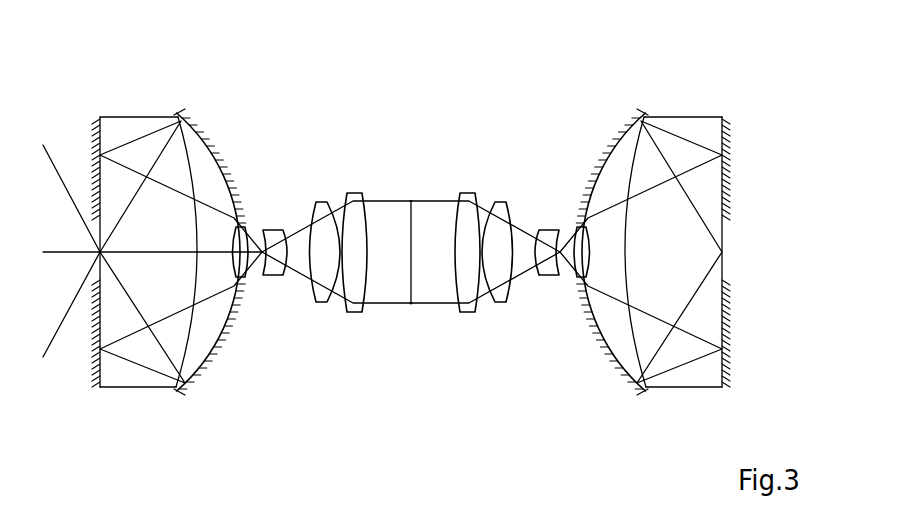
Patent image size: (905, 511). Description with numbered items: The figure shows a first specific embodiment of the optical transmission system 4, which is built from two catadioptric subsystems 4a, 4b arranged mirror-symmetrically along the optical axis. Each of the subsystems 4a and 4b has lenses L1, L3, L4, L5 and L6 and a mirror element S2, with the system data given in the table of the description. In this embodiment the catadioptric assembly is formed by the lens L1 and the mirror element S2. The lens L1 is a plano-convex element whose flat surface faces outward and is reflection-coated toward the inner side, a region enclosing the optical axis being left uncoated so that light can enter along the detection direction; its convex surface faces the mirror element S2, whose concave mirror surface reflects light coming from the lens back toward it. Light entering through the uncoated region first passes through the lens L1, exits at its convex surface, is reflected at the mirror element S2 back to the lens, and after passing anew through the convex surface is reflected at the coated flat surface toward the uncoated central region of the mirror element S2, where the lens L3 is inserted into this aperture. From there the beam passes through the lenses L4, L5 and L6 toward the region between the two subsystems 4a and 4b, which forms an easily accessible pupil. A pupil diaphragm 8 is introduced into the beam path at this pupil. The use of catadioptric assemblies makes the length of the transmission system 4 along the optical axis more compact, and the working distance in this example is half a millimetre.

The transmission system 4 is at (507, 73).
The subsystem 4a is at (408, 413).
The subsystem 4b is at (725, 413).
The lens L1 is at (117, 120).
The mirror element S2 is at (184, 116).
The lens L3 is at (243, 224).
The lens L4 is at (272, 229).
The lens L5 is at (318, 202).
The lens L6 is at (348, 193).
The pupil diaphragm 8 is at (413, 207).